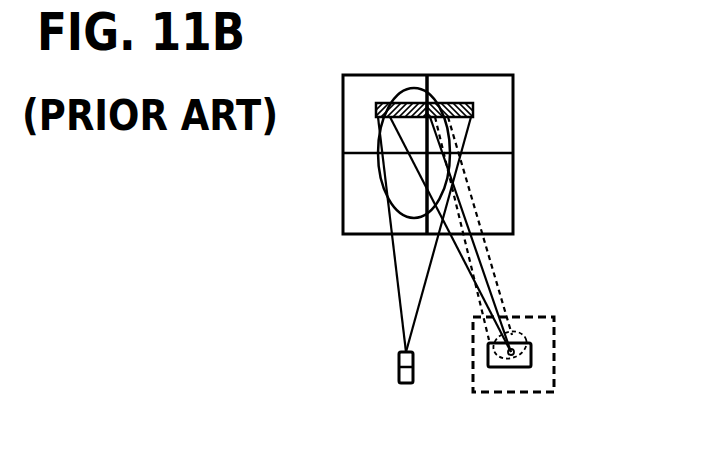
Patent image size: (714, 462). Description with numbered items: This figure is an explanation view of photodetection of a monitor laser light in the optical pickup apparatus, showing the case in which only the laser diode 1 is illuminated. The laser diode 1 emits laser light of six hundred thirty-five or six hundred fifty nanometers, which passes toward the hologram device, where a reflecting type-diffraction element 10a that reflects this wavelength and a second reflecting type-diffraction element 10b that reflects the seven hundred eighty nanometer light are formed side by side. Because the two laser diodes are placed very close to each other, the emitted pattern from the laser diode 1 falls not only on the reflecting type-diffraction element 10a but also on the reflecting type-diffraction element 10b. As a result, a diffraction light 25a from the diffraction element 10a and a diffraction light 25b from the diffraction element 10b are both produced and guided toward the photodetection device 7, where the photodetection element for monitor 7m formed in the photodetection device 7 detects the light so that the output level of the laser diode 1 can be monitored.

The reflecting type-diffraction element 10a is at (392, 103).
The reflecting type-diffraction element 10b is at (467, 103).
The laser diode 1 is at (398, 368).
The diffraction light 25a is at (460, 278).
The diffraction light 25b is at (496, 262).
The photodetection device 7 is at (528, 317).
The photodetection element for monitor 7m is at (531, 355).